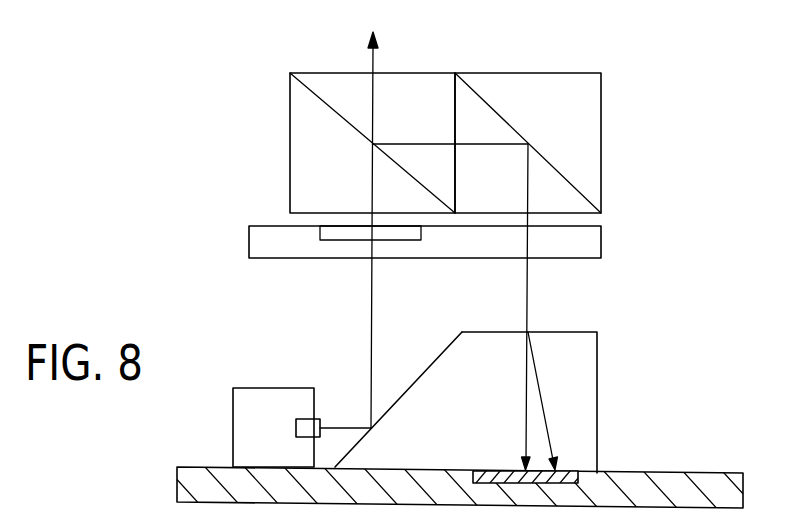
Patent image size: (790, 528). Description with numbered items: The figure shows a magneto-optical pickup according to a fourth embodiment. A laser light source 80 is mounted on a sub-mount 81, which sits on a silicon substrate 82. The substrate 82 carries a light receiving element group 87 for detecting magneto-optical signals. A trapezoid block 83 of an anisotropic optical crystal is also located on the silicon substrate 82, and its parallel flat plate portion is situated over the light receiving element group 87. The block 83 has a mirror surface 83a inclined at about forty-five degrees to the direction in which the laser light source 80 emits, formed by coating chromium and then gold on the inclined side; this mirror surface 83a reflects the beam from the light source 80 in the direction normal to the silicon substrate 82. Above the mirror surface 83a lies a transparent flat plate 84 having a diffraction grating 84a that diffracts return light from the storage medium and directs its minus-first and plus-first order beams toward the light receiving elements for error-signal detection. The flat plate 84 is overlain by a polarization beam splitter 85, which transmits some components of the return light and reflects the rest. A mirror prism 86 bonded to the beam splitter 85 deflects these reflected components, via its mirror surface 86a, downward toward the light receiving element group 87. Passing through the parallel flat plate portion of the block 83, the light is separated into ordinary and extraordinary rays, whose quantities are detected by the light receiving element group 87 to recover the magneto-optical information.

The laser light source 80 is at (318, 419).
The sub-mount 81 is at (250, 388).
The silicon substrate 82 is at (196, 467).
The trapezoid block 83 is at (494, 391).
The mirror surface 83a is at (423, 373).
The transparent flat plate 84 is at (421, 242).
The diffraction grating 84a is at (330, 240).
The polarization beam splitter 85 is at (327, 73).
The mirror prism 86 is at (563, 115).
The mirror surface of mirror prism 86a is at (572, 185).
The light receiving element group 87 is at (578, 478).